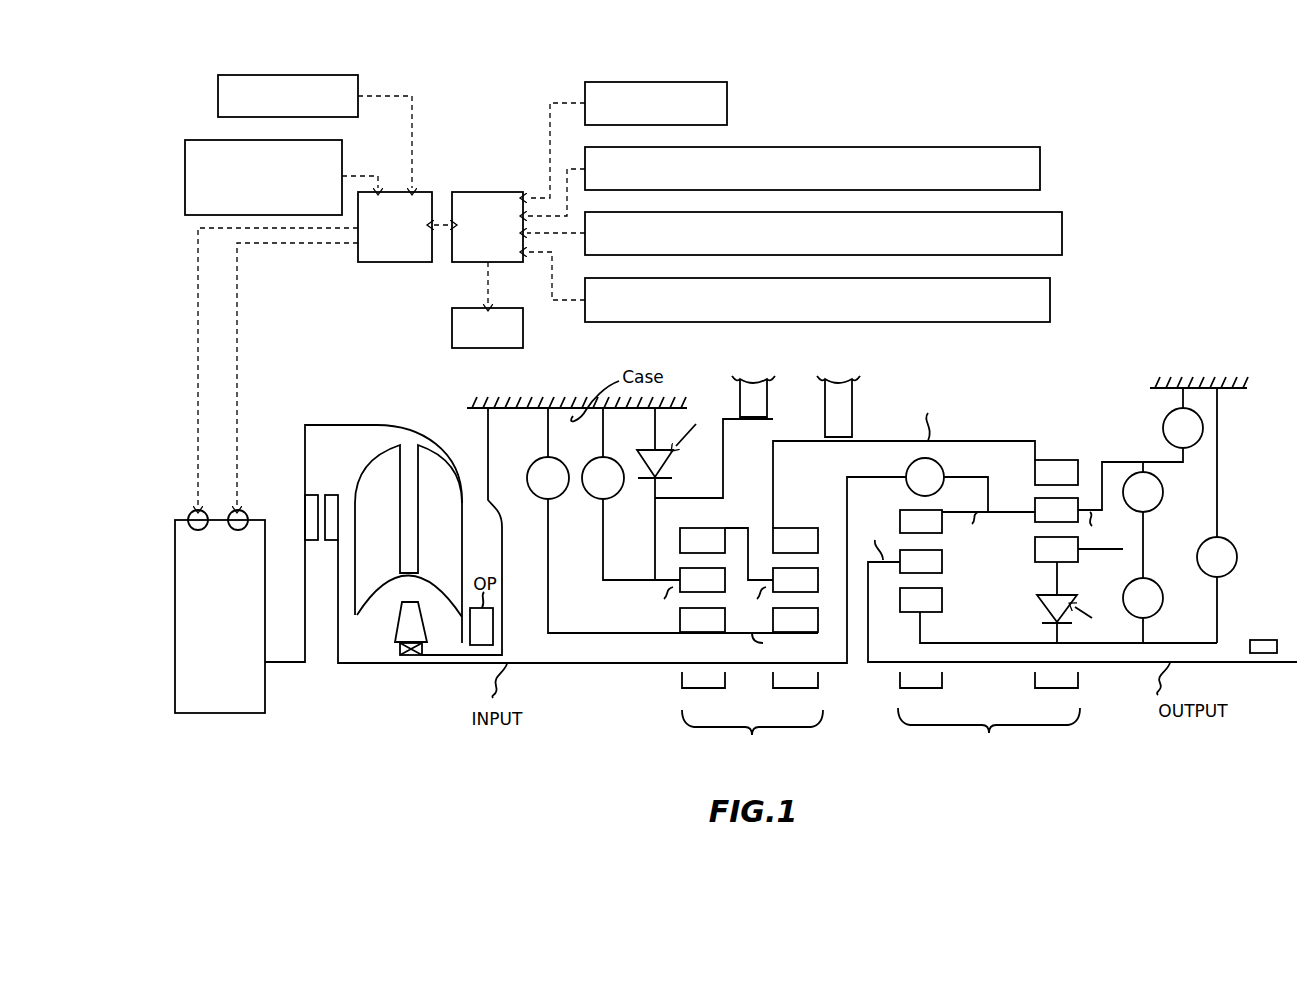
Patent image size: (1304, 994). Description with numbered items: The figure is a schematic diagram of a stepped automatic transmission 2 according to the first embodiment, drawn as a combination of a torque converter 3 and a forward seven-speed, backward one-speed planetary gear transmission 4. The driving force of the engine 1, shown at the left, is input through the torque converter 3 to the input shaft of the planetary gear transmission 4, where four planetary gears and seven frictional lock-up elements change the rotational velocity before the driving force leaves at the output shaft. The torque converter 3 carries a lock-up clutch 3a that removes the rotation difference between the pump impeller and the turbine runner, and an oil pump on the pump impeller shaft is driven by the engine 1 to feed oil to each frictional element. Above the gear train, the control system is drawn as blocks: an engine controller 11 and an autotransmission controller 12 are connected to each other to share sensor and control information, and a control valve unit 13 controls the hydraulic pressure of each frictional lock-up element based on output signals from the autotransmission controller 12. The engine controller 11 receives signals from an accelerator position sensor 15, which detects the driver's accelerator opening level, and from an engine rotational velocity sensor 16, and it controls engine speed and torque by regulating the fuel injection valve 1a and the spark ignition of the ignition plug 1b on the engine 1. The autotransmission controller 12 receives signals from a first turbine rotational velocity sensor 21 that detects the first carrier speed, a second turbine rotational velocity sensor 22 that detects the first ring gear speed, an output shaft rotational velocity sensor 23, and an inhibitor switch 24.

The engine 1 is at (265, 690).
The fuel injection valve 1a is at (194, 507).
The ignition plug 1b is at (242, 507).
The stepped automatic transmission 2 is at (613, 699).
The torque converter 3 is at (371, 415).
The lock-up clutch 3a is at (322, 484).
The planetary gear transmission 4 is at (869, 692).
The engine controller 11 is at (397, 262).
The autotransmission controller 12 is at (490, 192).
The control valve unit 13 is at (452, 337).
The accelerator position sensor 15 is at (218, 96).
The engine rotational velocity sensor 16 is at (185, 178).
The first turbine rotational velocity sensor 21 is at (1040, 168).
The second turbine rotational velocity sensor 22 is at (1062, 233).
The output shaft rotational velocity sensor 23 is at (1050, 300).
The inhibitor switch 24 is at (727, 103).